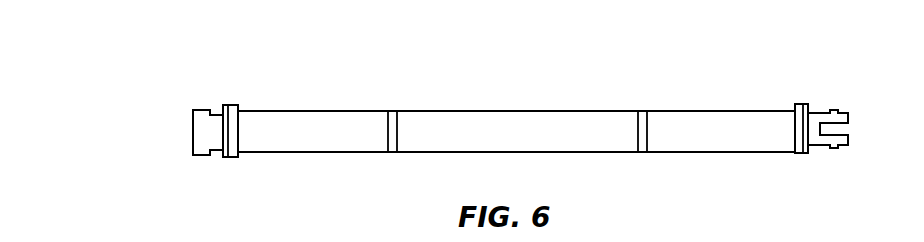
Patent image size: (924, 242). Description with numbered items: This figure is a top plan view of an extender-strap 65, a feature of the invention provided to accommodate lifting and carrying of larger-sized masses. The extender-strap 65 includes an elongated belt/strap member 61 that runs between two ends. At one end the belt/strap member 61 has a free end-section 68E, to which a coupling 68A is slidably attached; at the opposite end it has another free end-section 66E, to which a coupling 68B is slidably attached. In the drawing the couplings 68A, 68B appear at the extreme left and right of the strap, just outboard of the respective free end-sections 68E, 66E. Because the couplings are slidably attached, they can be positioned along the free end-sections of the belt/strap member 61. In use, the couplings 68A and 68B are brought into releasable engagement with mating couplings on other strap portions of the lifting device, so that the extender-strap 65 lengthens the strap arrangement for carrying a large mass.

The extender-strap 65 is at (678, 86).
The belt/strap member 61 is at (514, 121).
The coupling 68A is at (200, 116).
The coupling 68B is at (847, 146).
The free end-section 68E is at (241, 137).
The free end-section 66E is at (793, 138).